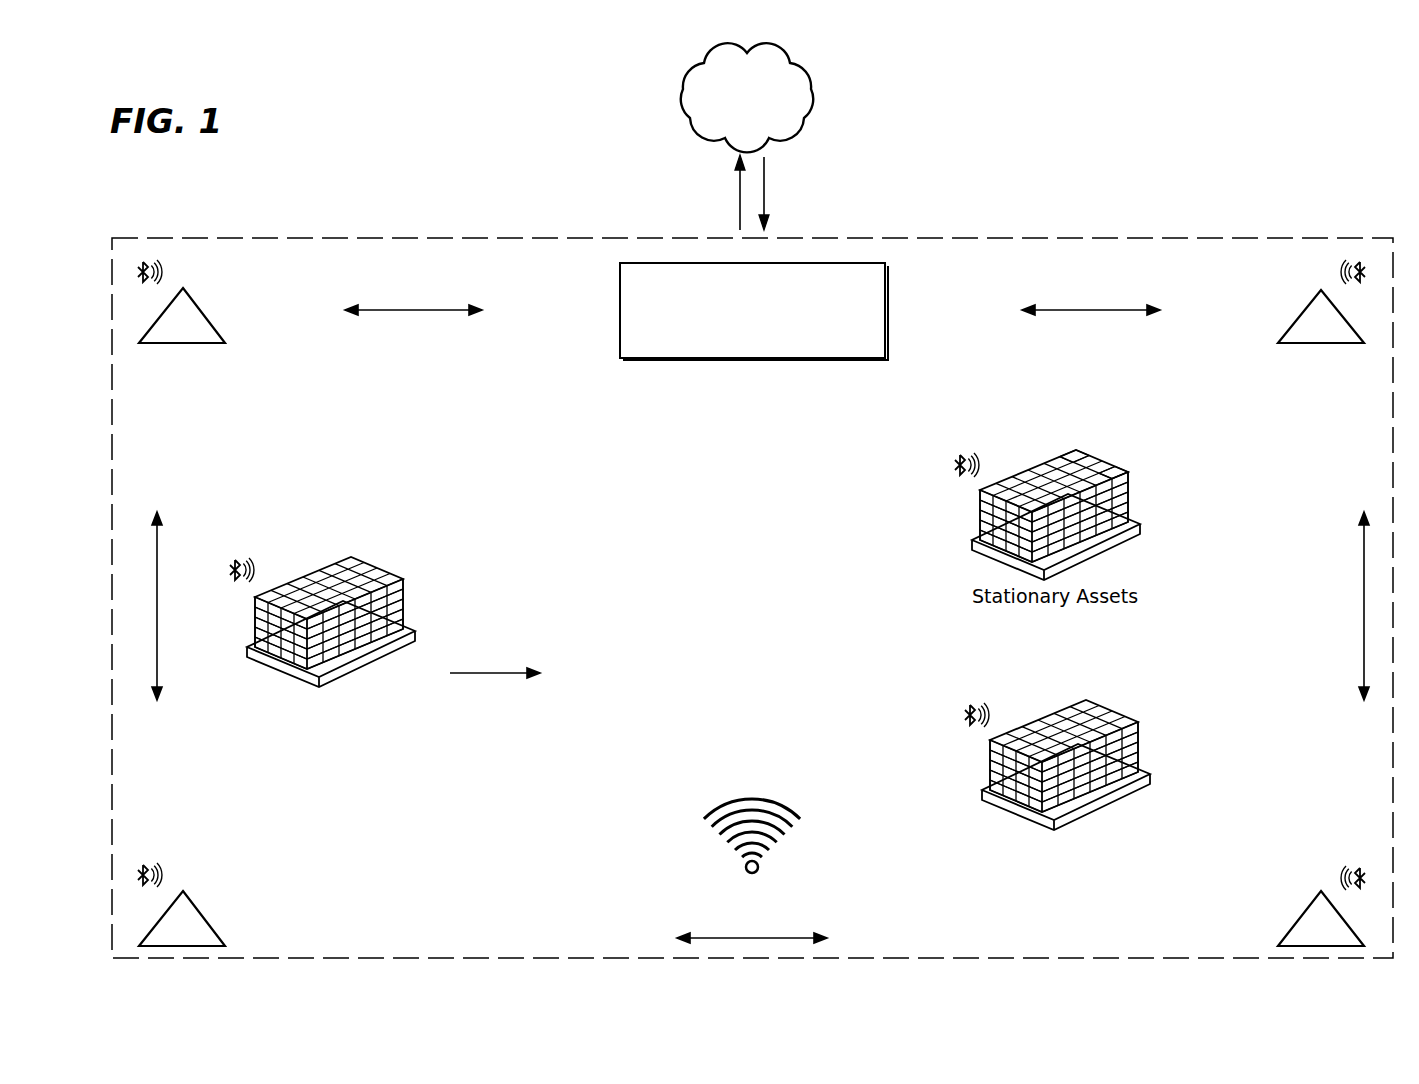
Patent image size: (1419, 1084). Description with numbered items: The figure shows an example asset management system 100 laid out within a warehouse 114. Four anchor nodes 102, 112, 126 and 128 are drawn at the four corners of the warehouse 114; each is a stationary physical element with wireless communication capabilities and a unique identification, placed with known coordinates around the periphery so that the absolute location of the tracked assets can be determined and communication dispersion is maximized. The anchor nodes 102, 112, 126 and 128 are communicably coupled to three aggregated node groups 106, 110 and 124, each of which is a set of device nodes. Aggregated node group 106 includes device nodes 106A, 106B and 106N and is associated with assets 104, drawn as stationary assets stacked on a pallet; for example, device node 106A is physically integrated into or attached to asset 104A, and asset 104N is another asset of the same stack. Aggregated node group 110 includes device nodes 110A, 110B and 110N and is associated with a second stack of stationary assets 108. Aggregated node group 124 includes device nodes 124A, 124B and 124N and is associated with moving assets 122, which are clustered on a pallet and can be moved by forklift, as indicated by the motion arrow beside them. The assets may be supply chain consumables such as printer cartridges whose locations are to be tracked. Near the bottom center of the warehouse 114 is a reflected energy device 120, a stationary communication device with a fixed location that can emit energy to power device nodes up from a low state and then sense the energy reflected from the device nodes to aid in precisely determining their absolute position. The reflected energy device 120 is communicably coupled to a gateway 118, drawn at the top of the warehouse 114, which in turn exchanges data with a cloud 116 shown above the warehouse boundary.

The asset management system 100 is at (1249, 187).
The anchor node 102 is at (1296, 322).
The asset 104 is at (1080, 438).
The asset 104A is at (1136, 453).
The asset 104N is at (1094, 435).
The aggregated node group 106 is at (1141, 501).
The device node 106A is at (1106, 488).
The device node 106B is at (1106, 506).
The device node 106N is at (1106, 533).
The asset 108 is at (1139, 756).
The aggregated node group 110 is at (1151, 753).
The device node 110A is at (1117, 740).
The device node 110B is at (1117, 757).
The device node 110N is at (1118, 785).
The anchor node 112 is at (1296, 925).
The warehouse 114 is at (902, 931).
The cloud 116 is at (822, 100).
The gateway 118 is at (848, 262).
The reflected energy device 120 is at (776, 797).
The asset 122 is at (408, 614).
The aggregated node group 124 is at (420, 609).
The device node 124A is at (382, 599).
The device node 124B is at (382, 614).
The device node 124N is at (383, 643).
The anchor node 126 is at (208, 922).
The anchor node 128 is at (208, 320).